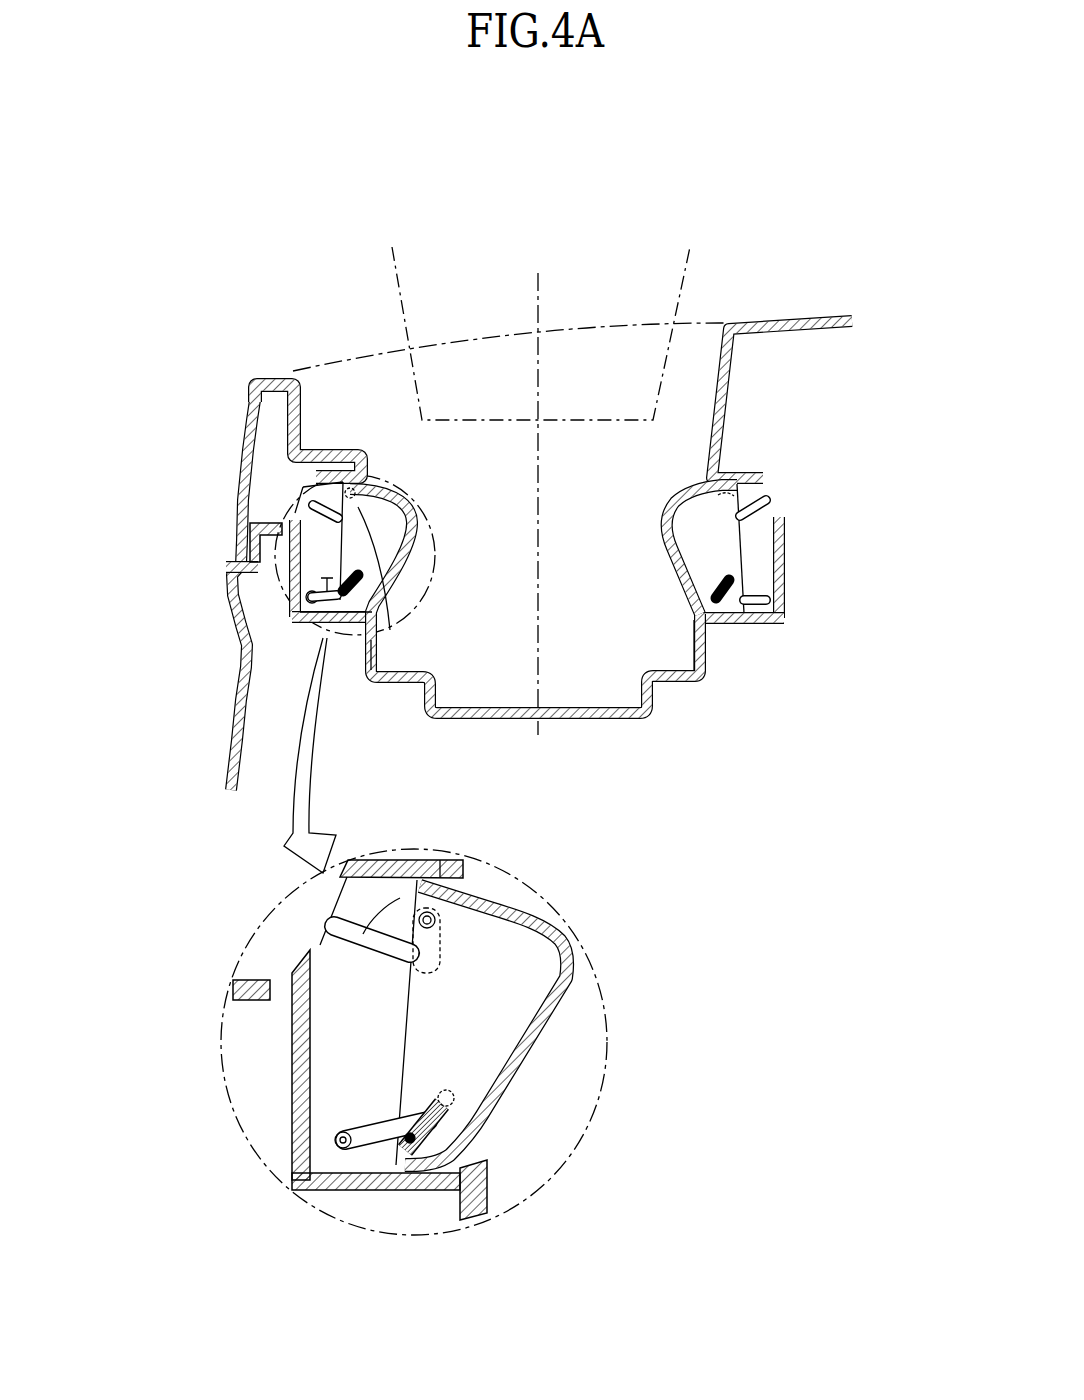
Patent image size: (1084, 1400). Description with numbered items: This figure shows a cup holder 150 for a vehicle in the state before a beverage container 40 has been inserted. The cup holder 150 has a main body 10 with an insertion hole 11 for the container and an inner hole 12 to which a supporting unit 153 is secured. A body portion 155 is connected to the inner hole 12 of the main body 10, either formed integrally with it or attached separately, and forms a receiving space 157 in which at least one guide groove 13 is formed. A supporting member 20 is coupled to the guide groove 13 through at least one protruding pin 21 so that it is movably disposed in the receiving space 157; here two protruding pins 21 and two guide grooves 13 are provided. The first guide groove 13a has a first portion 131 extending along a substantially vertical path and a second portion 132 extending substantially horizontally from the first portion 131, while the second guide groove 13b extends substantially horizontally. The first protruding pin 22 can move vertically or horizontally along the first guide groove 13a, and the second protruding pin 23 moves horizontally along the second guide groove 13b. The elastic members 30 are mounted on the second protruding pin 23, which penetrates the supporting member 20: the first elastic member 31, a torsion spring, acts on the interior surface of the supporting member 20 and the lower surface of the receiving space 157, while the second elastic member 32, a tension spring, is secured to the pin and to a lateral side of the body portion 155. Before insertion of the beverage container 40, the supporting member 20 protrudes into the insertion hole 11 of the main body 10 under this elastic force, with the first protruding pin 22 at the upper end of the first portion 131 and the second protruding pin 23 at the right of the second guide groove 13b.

The main body 10 is at (255, 749).
The insertion hole 11 is at (670, 648).
The inner hole 12 is at (318, 474).
The guide groove 13 is at (158, 498).
The first guide groove 13a is at (310, 503).
The second guide groove 13b is at (252, 553).
The supporting member 20 is at (425, 555).
The protruding pin 21 is at (440, 776).
The first protruding pin 22 is at (380, 682).
The second protruding pin 23 is at (355, 635).
The spring 30 is at (536, 953).
The first elastic member 31 is at (394, 1150).
The second elastic member 32 is at (440, 1150).
The beverage container 40 is at (392, 266).
The first portion 131 is at (445, 912).
The second portion 132 is at (400, 898).
The cup holder 150 is at (515, 697).
The supporting unit 153 is at (280, 635).
The body portion 155 is at (762, 575).
The receiving space 157 is at (300, 604).